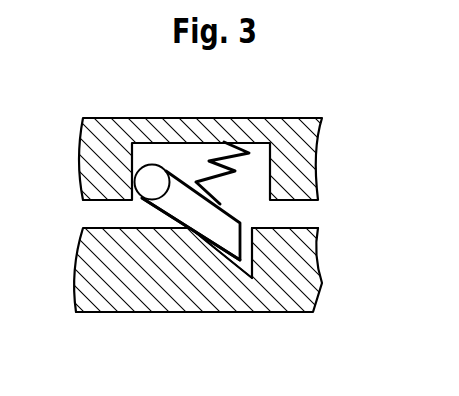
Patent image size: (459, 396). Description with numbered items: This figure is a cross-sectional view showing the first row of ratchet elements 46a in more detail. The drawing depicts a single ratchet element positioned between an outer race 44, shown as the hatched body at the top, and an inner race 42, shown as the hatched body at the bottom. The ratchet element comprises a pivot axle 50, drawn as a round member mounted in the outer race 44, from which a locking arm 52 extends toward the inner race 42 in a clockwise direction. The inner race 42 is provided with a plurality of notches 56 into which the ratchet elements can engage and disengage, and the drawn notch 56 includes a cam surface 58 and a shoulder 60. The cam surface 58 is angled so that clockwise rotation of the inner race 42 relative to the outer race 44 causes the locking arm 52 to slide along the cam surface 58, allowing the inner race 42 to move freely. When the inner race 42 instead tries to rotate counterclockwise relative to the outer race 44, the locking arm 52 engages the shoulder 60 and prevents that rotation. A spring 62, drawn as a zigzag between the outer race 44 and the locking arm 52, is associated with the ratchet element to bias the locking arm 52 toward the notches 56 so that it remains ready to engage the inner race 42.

The inner race 42 is at (287, 277).
The outer race 44 is at (297, 160).
The first row of ratchet elements 46a is at (170, 207).
The pivot axle 50 is at (157, 178).
The locking arm 52 is at (228, 236).
The notch 56 is at (236, 278).
The cam surface 58 is at (201, 247).
The shoulder 60 is at (246, 233).
The spring 62 is at (217, 160).